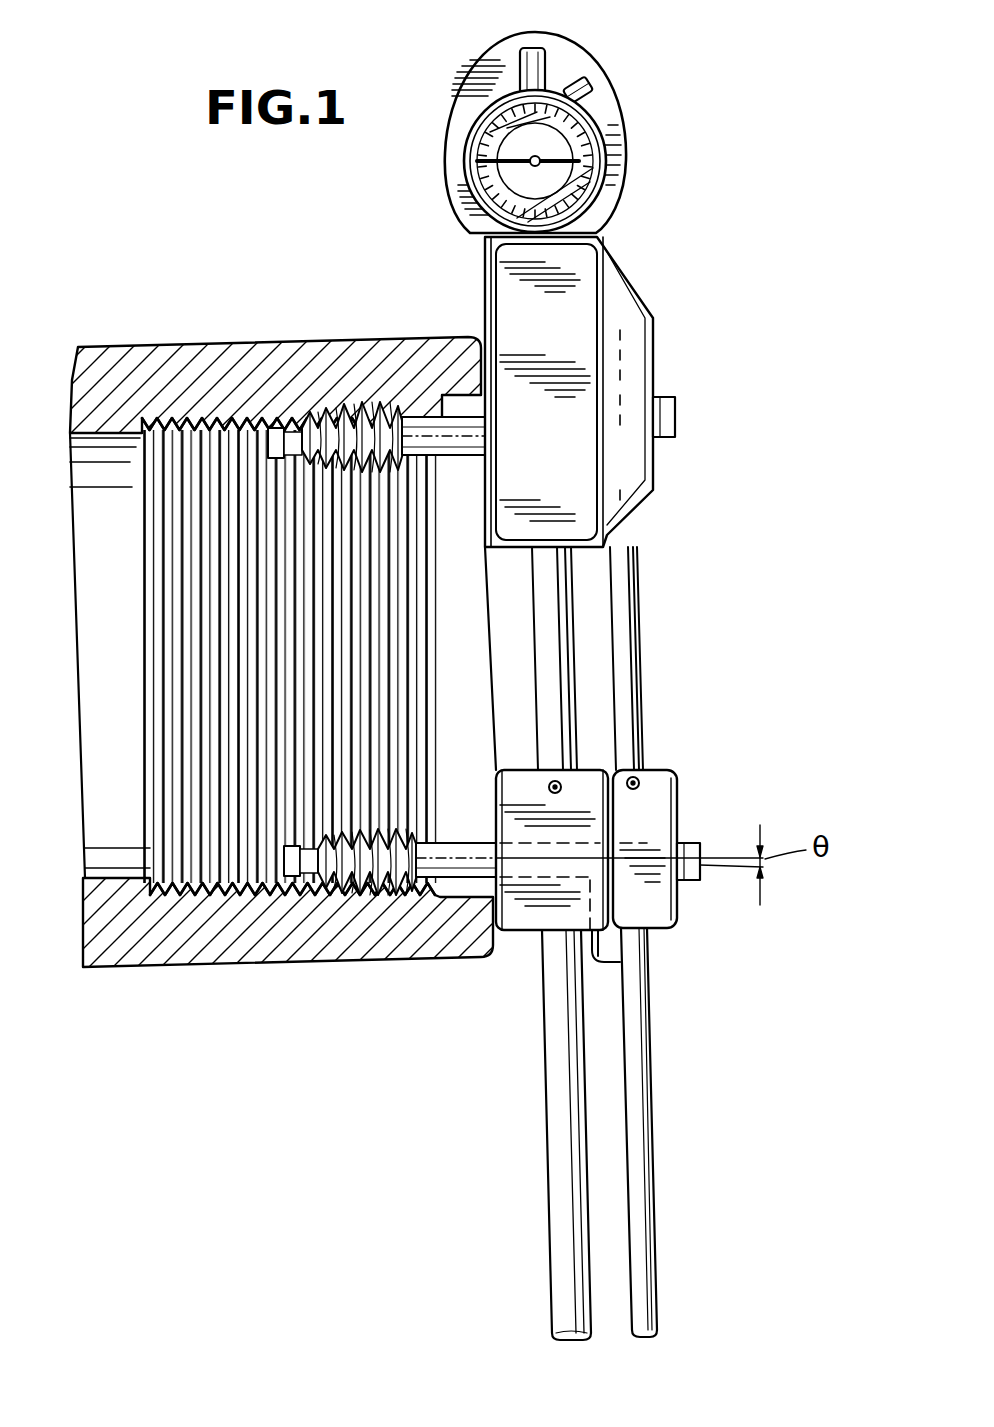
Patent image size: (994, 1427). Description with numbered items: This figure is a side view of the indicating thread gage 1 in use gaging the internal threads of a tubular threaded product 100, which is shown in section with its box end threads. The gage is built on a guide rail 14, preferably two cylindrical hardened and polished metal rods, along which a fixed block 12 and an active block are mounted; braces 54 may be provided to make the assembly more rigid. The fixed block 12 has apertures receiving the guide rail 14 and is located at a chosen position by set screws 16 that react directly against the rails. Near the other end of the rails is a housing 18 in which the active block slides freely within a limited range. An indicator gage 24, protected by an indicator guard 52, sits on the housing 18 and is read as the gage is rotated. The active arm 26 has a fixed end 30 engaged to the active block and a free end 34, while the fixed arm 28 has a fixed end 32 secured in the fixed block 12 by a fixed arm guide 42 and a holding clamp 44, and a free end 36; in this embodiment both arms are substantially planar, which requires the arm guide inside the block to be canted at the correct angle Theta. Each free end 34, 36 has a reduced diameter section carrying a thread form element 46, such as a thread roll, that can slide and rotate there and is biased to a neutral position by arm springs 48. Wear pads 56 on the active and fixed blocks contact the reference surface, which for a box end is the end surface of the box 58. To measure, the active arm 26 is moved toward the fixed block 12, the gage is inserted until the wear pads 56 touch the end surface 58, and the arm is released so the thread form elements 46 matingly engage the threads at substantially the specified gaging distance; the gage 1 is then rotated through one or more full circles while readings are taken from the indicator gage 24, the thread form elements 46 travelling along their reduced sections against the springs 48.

The indicating thread gage 1 is at (628, 163).
The fixed block 12 is at (676, 790).
The guide rail 14 is at (548, 1142).
The set screws 16 is at (562, 782).
The housing 18 is at (632, 302).
The indicator gage 24 is at (590, 120).
The active arm 26 is at (443, 415).
The fixed arm 28 is at (425, 900).
The fixed end of active arm 30 is at (680, 415).
The fixed end of fixed arm 32 is at (690, 880).
The free end of active arm 34 is at (268, 415).
The free end of fixed arm 36 is at (308, 897).
The fixed arm guide 42 is at (650, 843).
The holding clamp 44 is at (600, 963).
The thread form element 46 is at (332, 415).
The arm springs 48 is at (282, 418).
The indicator guard 52 is at (458, 88).
The braces 54 is at (655, 1143).
The wear pads 56 is at (525, 498).
The end surface of the box 58 is at (458, 340).
The threaded product 100 is at (93, 356).